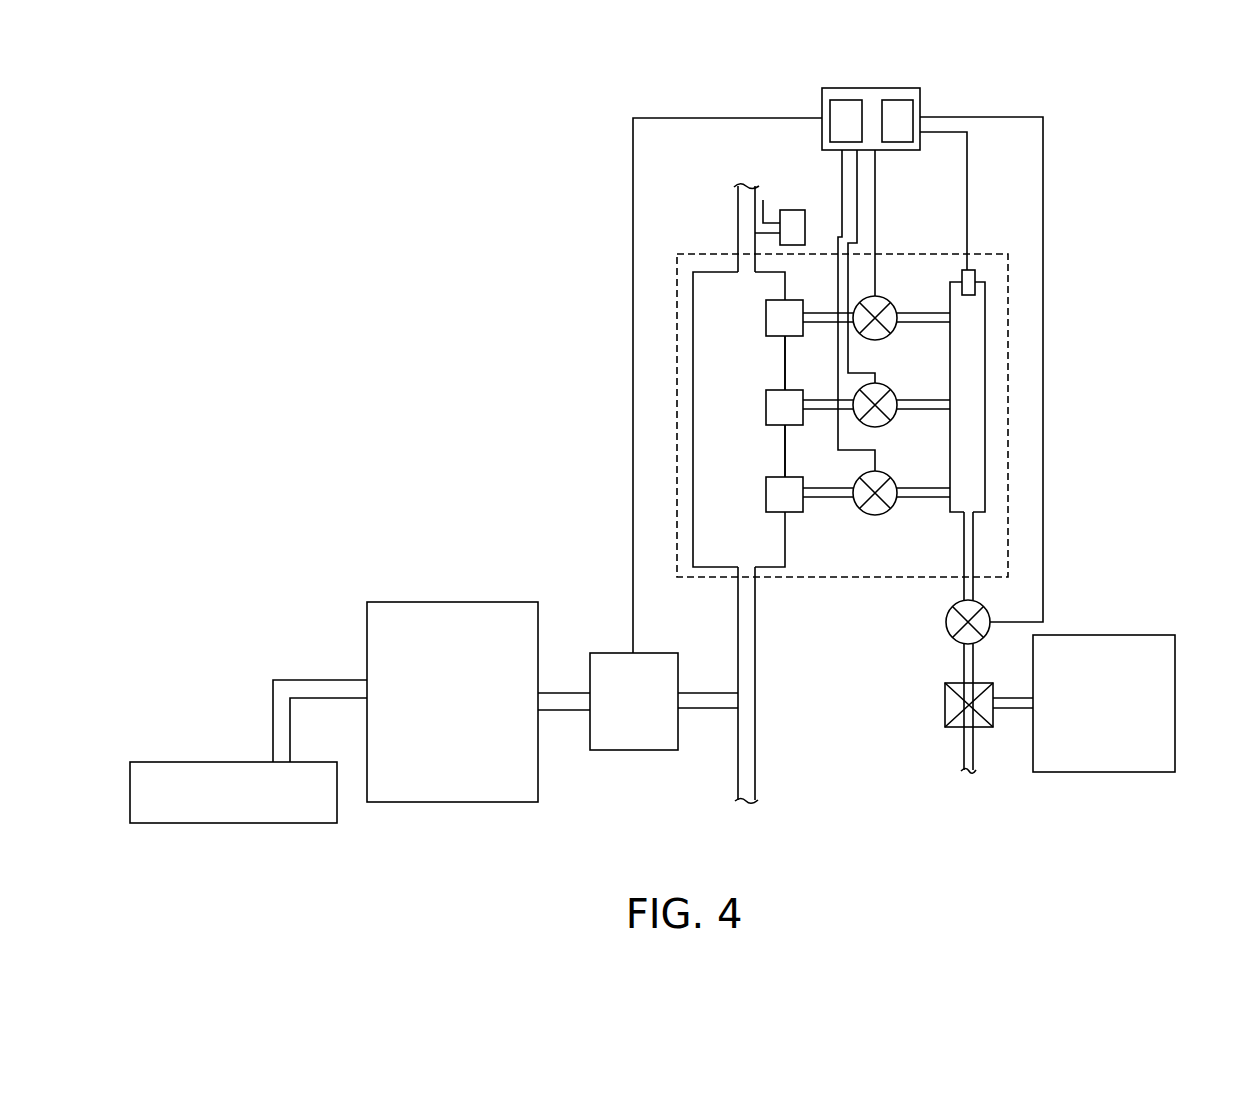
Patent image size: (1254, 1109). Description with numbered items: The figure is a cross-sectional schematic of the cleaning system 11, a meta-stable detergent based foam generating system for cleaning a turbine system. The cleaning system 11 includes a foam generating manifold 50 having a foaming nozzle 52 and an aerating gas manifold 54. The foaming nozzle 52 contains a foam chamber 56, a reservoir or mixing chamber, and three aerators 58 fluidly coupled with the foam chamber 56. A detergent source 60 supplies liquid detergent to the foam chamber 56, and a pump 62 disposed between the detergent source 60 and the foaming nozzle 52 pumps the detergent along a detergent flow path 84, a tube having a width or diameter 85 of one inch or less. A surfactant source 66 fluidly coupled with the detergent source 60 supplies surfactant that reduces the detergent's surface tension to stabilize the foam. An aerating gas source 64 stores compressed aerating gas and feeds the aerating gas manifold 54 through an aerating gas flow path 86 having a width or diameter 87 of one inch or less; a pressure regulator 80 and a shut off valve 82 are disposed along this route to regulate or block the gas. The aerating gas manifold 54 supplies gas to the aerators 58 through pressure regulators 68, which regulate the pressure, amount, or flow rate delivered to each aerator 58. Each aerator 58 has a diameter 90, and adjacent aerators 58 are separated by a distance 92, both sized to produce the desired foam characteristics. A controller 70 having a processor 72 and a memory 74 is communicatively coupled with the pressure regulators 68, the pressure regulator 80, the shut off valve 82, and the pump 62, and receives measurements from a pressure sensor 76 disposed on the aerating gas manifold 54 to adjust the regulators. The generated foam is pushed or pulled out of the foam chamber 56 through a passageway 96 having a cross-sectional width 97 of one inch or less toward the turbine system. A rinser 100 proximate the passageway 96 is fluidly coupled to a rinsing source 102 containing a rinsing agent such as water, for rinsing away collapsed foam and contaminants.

The cleaning system 11 is at (265, 199).
The foam generating manifold 50 is at (1010, 348).
The foaming nozzle 52 is at (695, 292).
The aerating gas manifold 54 is at (985, 428).
The foam chamber 56 is at (716, 356).
The aerators 58 is at (768, 340).
The detergent source 60 is at (452, 602).
The pump 62 is at (600, 653).
The aerating gas source 64 is at (1140, 635).
The surfactant source 66 is at (178, 762).
The pressure regulators 68 is at (878, 297).
The controller 70 is at (838, 334).
The processor 72 is at (918, 108).
The memory 74 is at (826, 108).
The pressure sensor 76 is at (978, 270).
The pressure regulator 80 is at (946, 622).
The shut off valve 82 is at (945, 705).
The detergent flow path 84 is at (760, 573).
The width or diameter 85 is at (750, 805).
The aerating gas flow path 86 is at (962, 517).
The width or diameter 87 is at (968, 775).
The diameter 90 is at (762, 300).
The distance 92 is at (790, 338).
The passageway 96 is at (738, 215).
The cross-sectional width 97 is at (759, 178).
The rinser 100 is at (763, 200).
The rinsing source 102 is at (811, 210).